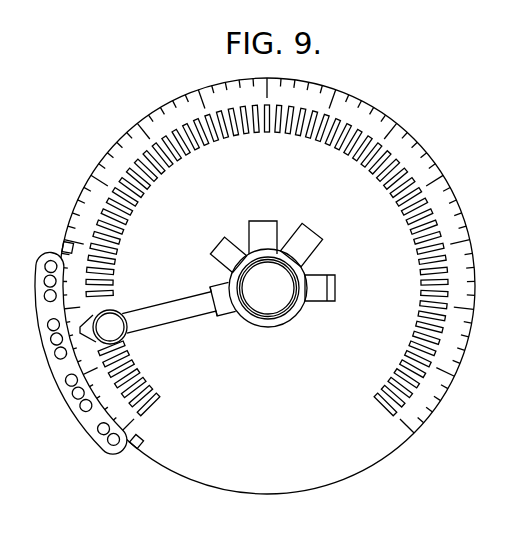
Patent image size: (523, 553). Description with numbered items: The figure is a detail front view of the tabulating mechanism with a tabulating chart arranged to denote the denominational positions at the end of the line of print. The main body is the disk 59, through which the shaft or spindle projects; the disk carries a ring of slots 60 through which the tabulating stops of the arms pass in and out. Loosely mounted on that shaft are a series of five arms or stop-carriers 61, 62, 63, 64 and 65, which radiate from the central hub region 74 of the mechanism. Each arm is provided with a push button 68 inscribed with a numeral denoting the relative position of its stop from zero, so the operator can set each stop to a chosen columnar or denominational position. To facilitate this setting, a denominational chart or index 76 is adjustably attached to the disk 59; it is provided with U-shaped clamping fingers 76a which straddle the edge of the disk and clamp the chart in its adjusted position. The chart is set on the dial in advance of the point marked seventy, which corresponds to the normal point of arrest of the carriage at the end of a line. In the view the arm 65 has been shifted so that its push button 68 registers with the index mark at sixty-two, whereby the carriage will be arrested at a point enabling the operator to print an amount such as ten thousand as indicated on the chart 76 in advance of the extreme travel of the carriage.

The disk 59 is at (267, 286).
The slots 60 is at (414, 283).
The arm 61 is at (335, 291).
The arm 62 is at (313, 238).
The arm 63 is at (262, 221).
The arm 64 is at (220, 245).
The arm 65 is at (158, 304).
The push button 68 is at (118, 311).
The hub 74 is at (268, 288).
The denominational chart 76 is at (57, 375).
The clamping fingers 76a is at (66, 247).